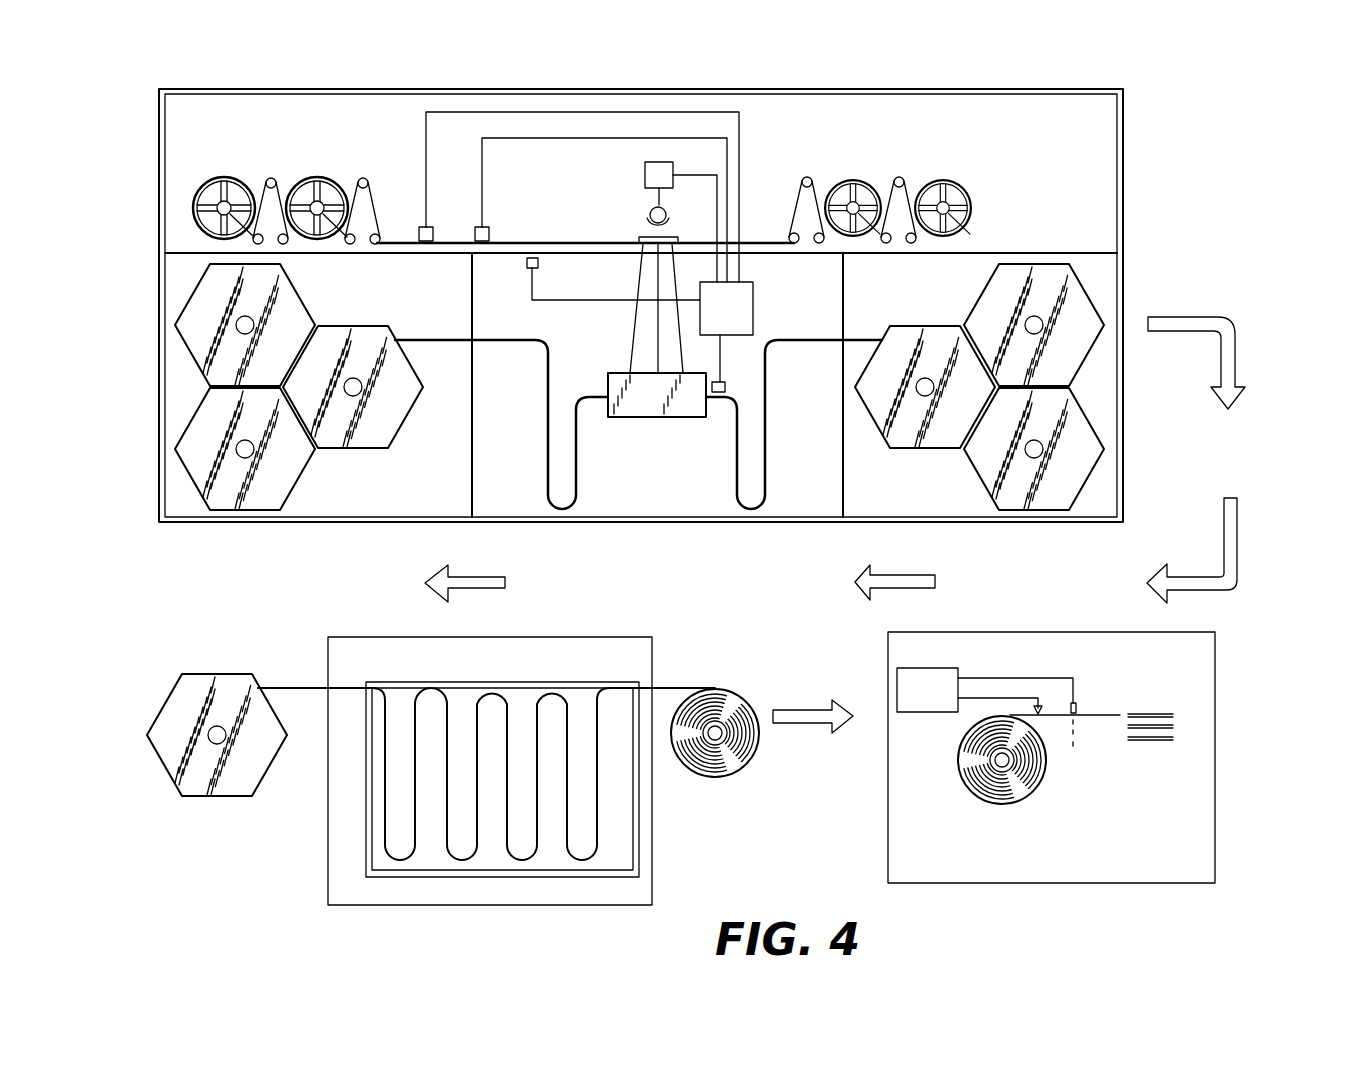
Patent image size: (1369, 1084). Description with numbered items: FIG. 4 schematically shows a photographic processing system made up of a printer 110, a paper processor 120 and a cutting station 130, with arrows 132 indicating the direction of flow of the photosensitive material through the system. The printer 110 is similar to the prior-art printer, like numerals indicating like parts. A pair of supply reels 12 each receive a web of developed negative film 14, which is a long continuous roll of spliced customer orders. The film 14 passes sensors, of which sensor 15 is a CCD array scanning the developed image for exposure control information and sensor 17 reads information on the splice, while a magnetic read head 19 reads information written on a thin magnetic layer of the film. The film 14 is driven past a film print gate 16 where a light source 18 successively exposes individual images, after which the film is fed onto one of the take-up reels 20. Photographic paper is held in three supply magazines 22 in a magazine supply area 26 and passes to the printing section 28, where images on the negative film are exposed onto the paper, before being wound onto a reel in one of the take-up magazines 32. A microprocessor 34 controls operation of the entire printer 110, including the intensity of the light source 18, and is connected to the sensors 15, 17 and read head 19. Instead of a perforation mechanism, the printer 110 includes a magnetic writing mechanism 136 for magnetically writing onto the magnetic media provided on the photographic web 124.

The printer 110 is at (1146, 162).
The supply reels 12 is at (224, 177).
The web of developed negative film 14 is at (285, 195).
The sensor 15 is at (424, 228).
The film print gate 16 is at (640, 237).
The sensor 17 is at (487, 228).
The light source 18 is at (650, 206).
The magnetic read head 19 is at (530, 270).
The take-up reels 20 is at (852, 180).
The supply magazines 22 is at (293, 288).
The magazine supply area 26 is at (462, 464).
The printing section 28 is at (603, 351).
The take-up magazines 32 is at (916, 326).
The microprocessor 34 is at (755, 292).
The paper processor 120 is at (670, 645).
The photographic web 124 is at (488, 340).
The cutting station 130 is at (1236, 664).
The arrows 132 is at (1240, 328).
The magnetic writing mechanism 136 is at (725, 382).